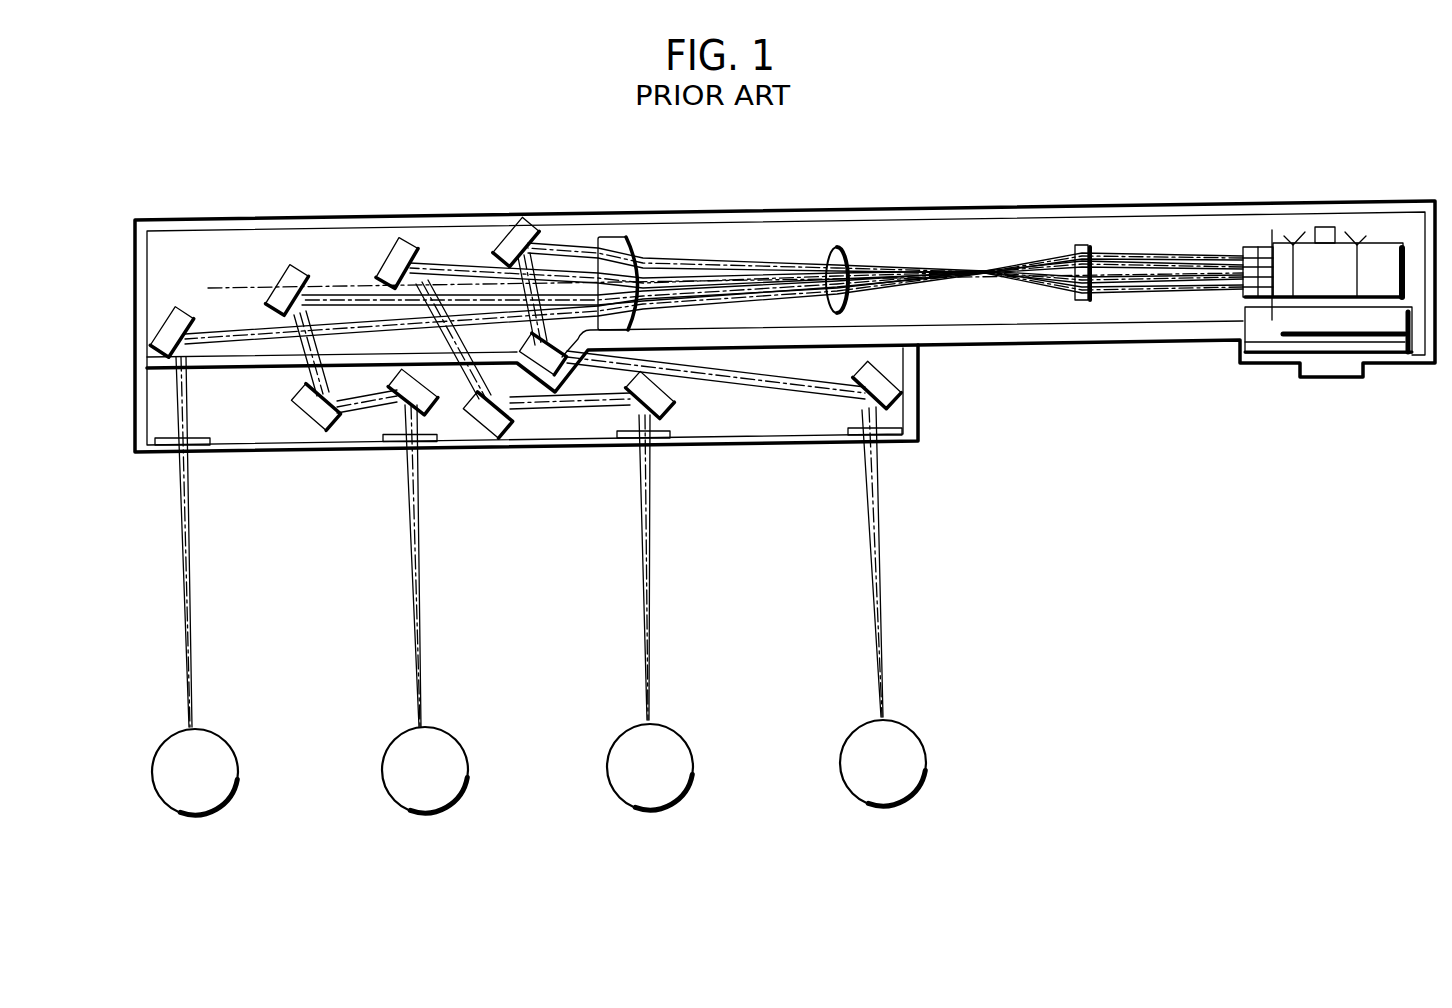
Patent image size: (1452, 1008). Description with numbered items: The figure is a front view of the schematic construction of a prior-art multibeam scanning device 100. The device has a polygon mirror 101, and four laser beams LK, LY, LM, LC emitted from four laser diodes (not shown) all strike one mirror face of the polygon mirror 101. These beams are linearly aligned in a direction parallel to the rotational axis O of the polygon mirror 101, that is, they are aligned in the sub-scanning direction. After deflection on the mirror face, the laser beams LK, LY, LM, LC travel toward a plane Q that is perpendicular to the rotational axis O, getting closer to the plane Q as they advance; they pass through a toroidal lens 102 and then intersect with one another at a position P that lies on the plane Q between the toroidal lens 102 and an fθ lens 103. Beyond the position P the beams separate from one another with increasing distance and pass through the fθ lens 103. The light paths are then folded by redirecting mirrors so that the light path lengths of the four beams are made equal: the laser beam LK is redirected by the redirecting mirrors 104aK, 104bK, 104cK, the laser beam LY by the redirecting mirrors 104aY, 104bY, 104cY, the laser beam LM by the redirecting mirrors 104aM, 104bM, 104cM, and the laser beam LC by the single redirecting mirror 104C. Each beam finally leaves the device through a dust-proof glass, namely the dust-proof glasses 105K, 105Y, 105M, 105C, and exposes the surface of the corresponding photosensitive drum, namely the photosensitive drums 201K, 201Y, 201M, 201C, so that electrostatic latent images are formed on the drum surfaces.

The multibeam scanning device 100 is at (1210, 154).
The polygon mirror 101 is at (1335, 263).
The toroidal lens 102 is at (1083, 245).
The fθ lens 103 is at (615, 240).
The position P is at (840, 247).
The rotational axis O is at (1328, 230).
The plane Q is at (240, 288).
The laser beam LC is at (1258, 254).
The laser beam LM is at (1260, 262).
The laser beam LY is at (1253, 300).
The laser beam LK is at (1257, 307).
The redirecting mirror 104C is at (178, 307).
The redirecting mirror 104aM is at (290, 266).
The redirecting mirror 104aY is at (398, 240).
The redirecting mirror 104aK is at (521, 220).
The redirecting mirror 104bM is at (313, 432).
The redirecting mirror 104bY is at (498, 438).
The redirecting mirror 104bK is at (543, 358).
The redirecting mirror 104cM is at (423, 415).
The redirecting mirror 104cY is at (660, 422).
The redirecting mirror 104cK is at (880, 385).
The dust-proof glass 105C is at (198, 455).
The dust-proof glass 105M is at (387, 455).
The dust-proof glass 105Y is at (620, 450).
The dust-proof glass 105K is at (853, 450).
The photosensitive drum 201C is at (195, 772).
The photosensitive drum 201M is at (425, 770).
The photosensitive drum 201Y is at (650, 767).
The photosensitive drum 201K is at (883, 763).